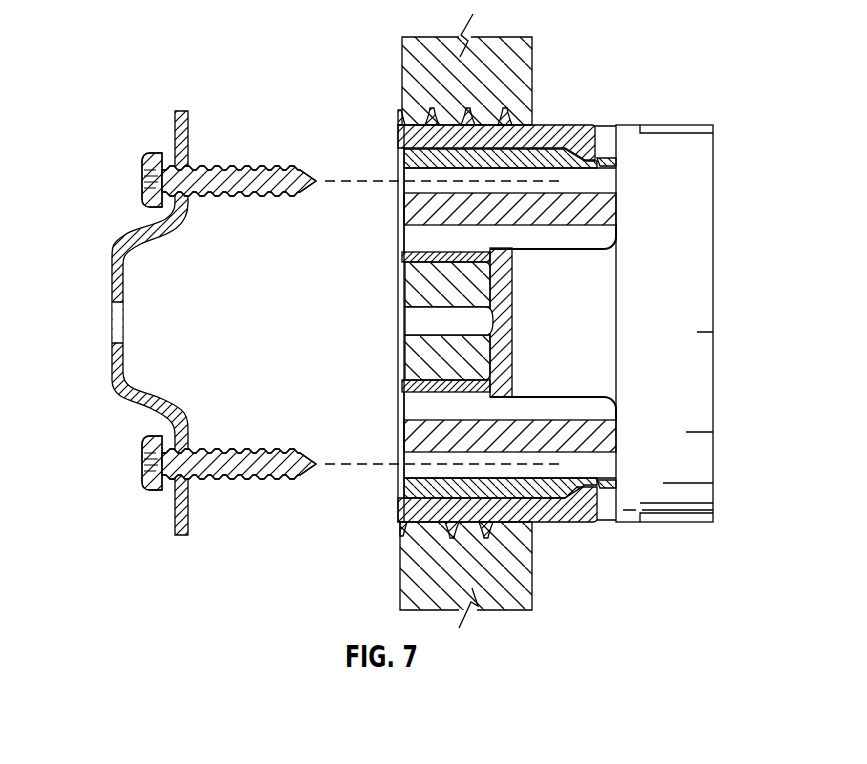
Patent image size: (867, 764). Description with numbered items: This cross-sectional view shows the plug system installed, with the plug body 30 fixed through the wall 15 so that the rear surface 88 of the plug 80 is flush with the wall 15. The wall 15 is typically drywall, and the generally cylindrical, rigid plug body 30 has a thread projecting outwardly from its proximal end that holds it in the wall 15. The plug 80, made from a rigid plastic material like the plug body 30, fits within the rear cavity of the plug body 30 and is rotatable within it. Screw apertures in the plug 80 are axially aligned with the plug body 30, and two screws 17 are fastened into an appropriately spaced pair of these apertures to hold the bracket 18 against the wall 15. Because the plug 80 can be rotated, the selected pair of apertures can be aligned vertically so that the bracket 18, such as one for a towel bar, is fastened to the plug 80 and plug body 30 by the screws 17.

The wall 15 is at (515, 63).
The screw 17 is at (257, 180).
The bracket 18 is at (115, 279).
The plug body 30 is at (584, 515).
The plug 80 is at (552, 208).
The rear surface 88 is at (397, 486).